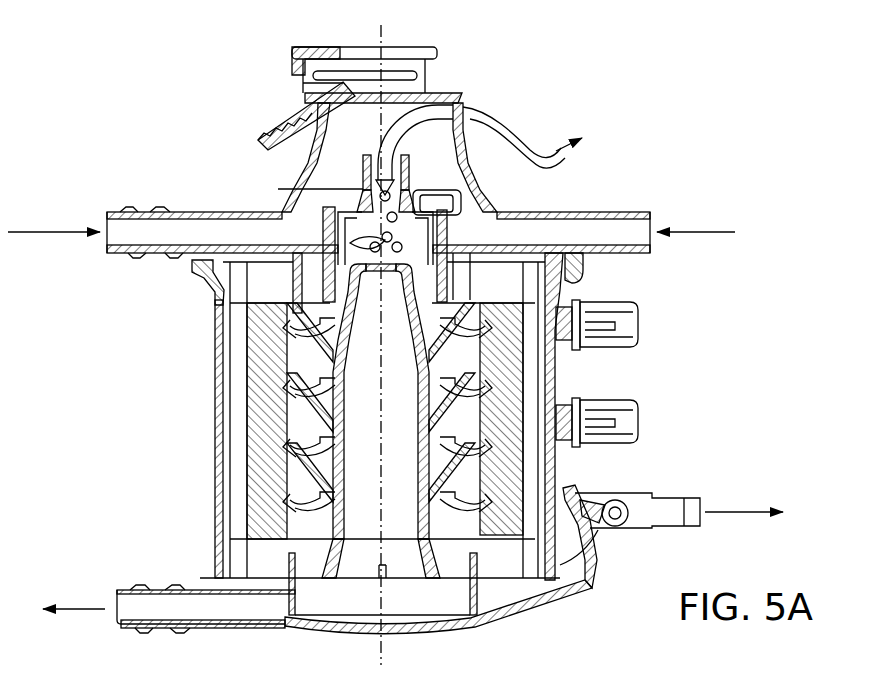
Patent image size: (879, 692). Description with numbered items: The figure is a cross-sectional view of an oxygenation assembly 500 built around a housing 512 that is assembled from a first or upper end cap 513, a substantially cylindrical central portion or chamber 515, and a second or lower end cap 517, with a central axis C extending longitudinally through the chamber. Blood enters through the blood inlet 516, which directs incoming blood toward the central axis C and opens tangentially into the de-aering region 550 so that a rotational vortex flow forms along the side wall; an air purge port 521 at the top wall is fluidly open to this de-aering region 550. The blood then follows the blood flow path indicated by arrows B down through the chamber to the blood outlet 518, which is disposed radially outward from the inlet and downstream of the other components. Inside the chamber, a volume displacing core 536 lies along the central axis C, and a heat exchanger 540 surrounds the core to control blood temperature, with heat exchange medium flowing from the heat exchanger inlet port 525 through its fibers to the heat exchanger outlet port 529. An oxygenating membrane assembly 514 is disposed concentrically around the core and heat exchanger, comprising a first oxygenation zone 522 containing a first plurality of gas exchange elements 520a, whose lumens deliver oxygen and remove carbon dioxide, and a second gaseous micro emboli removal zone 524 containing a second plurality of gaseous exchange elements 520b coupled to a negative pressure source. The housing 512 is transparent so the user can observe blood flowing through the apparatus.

The oxygenation assembly 500 is at (158, 79).
The housing 512 is at (205, 320).
The first or upper end cap 513 is at (308, 172).
The oxygenating membrane assembly 514 is at (555, 395).
The central portion or chamber 515 is at (213, 403).
The blood inlet 516 is at (640, 212).
The second or lower end cap 517 is at (463, 627).
The blood outlet 518 is at (693, 493).
The first plurality of gas exchange elements 520a is at (530, 507).
The second plurality of gaseous exchange elements 520b is at (560, 462).
The air purge port 521 is at (543, 137).
The first (oxygenation) zone 522 is at (265, 490).
The second (gaseous micro emboli removal) zone 524 is at (265, 450).
The heat exchanger inlet port 525 is at (120, 212).
The heat exchanger outlet port 529 is at (128, 630).
The volume displacing core 536 is at (333, 327).
The heat exchanger 540 is at (460, 290).
The de-aering region 550 is at (470, 212).
The blood flow path arrows B is at (332, 204).
The central axis C is at (378, 34).